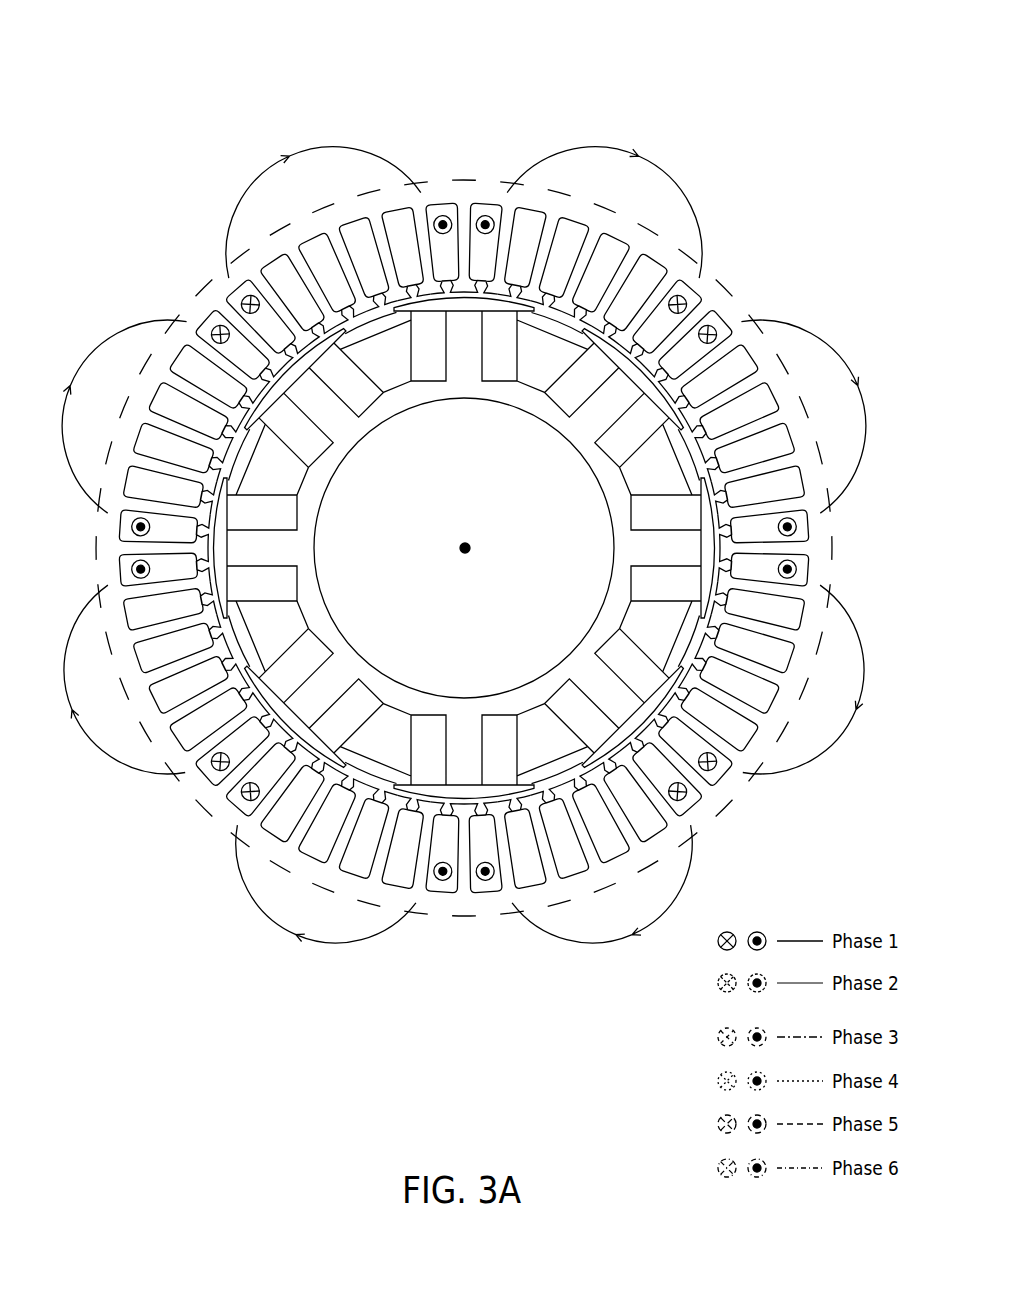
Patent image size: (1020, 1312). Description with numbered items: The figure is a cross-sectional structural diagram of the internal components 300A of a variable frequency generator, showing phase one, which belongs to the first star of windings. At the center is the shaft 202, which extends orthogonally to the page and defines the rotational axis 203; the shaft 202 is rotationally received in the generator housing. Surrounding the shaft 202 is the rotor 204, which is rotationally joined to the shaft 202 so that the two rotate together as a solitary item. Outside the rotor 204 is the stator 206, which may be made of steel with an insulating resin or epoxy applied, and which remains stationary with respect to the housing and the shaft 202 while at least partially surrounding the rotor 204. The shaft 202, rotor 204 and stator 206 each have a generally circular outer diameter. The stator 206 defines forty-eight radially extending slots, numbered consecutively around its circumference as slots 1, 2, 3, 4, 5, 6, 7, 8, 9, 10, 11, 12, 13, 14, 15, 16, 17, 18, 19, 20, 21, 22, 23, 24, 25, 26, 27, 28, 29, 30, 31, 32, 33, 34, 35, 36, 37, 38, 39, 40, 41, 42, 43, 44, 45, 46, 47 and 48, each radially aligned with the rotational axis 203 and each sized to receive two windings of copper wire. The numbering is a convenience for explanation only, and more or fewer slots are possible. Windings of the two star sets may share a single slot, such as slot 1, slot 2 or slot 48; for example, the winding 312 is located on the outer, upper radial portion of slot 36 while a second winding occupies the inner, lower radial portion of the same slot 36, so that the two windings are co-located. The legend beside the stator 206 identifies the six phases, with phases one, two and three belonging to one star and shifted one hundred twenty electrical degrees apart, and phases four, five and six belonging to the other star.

The internal components 300A is at (116, 71).
The shaft 202 is at (510, 488).
The rotational axis 203 is at (468, 556).
The rotor 204 is at (461, 345).
The stator 206 is at (295, 838).
The winding 312 is at (329, 143).
The slot 1 is at (778, 578).
The slot 2 is at (769, 618).
The slot 3 is at (755, 657).
The slot 4 is at (739, 694).
The slot 5 is at (717, 729).
The slot 6 is at (696, 760).
The slot 7 is at (664, 791).
The slot 8 is at (629, 812).
The slot 9 is at (593, 832).
The slot 10 is at (555, 847).
The slot 11 is at (516, 858).
The slot 12 is at (478, 864).
The slot 13 is at (434, 864).
The slot 14 is at (394, 857).
The slot 15 is at (355, 843).
The slot 16 is at (317, 826).
The slot 17 is at (283, 803).
The slot 18 is at (251, 780).
The slot 19 is at (220, 748).
The slot 20 is at (199, 713).
The slot 21 is at (180, 677).
The slot 22 is at (165, 639).
The slot 23 is at (155, 600).
The slot 24 is at (149, 562).
The slot 25 is at (149, 518).
The slot 26 is at (157, 478).
The slot 27 is at (170, 439).
The slot 28 is at (187, 401).
The slot 29 is at (210, 367).
The slot 30 is at (231, 335).
The slot 31 is at (263, 304).
The slot 32 is at (299, 283).
The slot 33 is at (334, 264).
The slot 34 is at (373, 248).
The slot 35 is at (413, 237).
The slot 36 is at (450, 230).
The slot 37 is at (494, 231).
The slot 38 is at (534, 238).
The slot 39 is at (573, 252).
The slot 40 is at (610, 269).
The slot 41 is at (645, 291).
The slot 42 is at (676, 315).
The slot 43 is at (707, 347).
The slot 44 is at (728, 383).
The slot 45 is at (748, 418).
The slot 46 is at (762, 457).
The slot 47 is at (773, 497).
The slot 48 is at (779, 534).